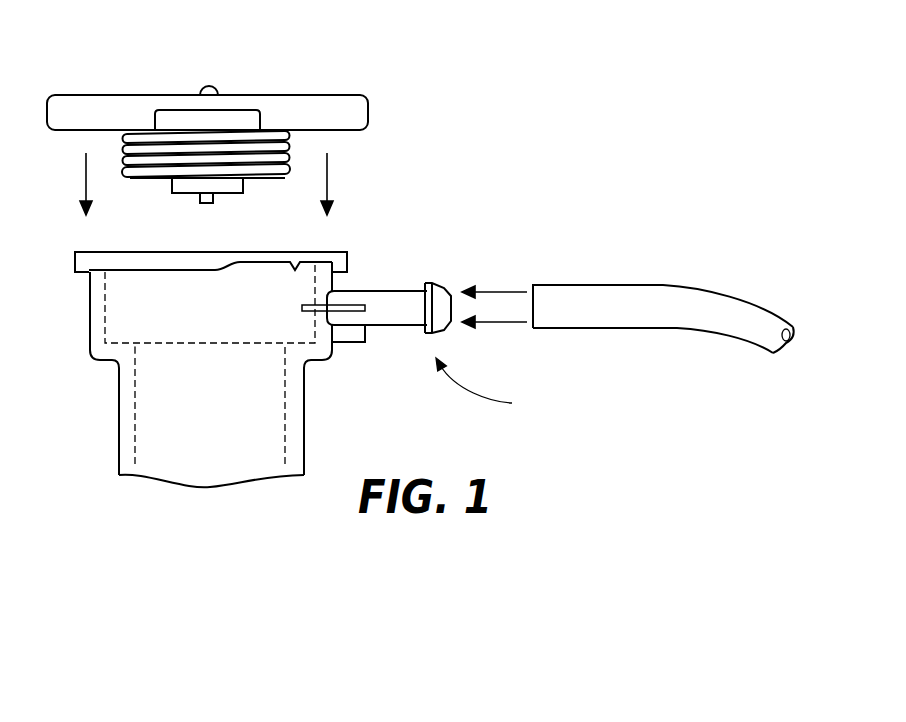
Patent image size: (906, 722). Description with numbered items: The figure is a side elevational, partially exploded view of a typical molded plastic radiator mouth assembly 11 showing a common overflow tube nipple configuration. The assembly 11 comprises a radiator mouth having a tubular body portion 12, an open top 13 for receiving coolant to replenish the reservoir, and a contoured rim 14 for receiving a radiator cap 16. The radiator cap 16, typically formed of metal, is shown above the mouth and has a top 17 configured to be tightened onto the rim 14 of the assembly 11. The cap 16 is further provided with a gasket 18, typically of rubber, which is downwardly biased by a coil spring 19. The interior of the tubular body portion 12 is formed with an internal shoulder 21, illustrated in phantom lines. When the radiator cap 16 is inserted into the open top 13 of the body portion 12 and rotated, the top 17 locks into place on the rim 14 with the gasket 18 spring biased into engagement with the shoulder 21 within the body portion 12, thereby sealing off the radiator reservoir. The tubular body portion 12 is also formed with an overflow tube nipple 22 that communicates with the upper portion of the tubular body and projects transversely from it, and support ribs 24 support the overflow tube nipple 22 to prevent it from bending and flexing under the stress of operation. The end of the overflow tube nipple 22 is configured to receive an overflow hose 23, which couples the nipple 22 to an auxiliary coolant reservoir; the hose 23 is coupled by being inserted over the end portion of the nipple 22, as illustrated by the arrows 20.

The assembly 11 is at (500, 116).
The tubular body portion 12 is at (148, 336).
The open top 13 is at (283, 253).
The contoured rim 14 is at (95, 258).
The radiator cap 16 is at (308, 70).
The top 17 is at (110, 112).
The gasket 18 is at (146, 180).
The coil spring 19 is at (287, 133).
The arrows 20 is at (503, 290).
The internal shoulder 21 is at (187, 340).
The overflow tube nipple 22 is at (489, 390).
The overflow hose 23 is at (677, 297).
The support ribs 24 is at (364, 308).